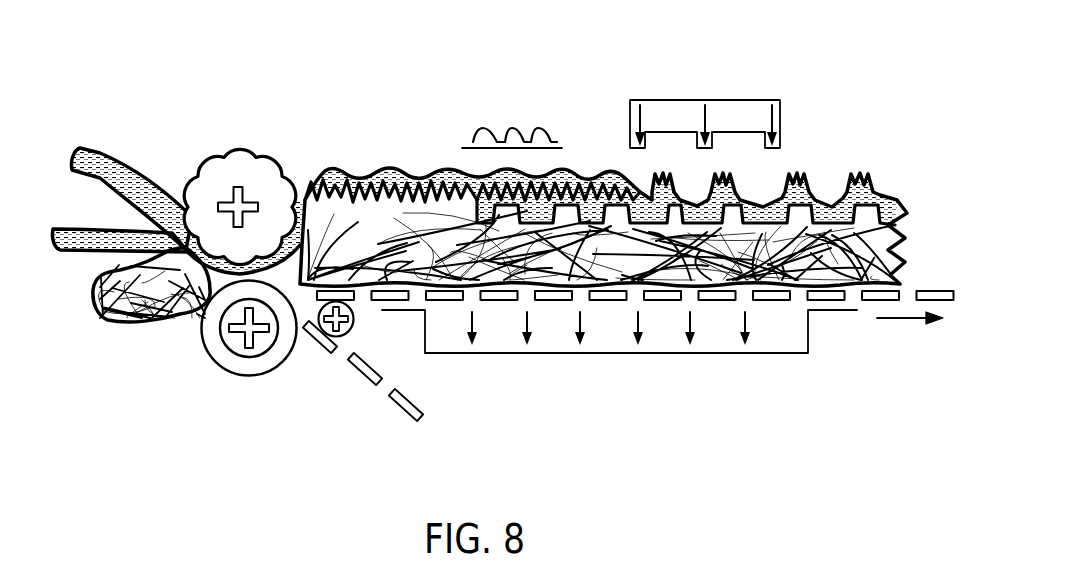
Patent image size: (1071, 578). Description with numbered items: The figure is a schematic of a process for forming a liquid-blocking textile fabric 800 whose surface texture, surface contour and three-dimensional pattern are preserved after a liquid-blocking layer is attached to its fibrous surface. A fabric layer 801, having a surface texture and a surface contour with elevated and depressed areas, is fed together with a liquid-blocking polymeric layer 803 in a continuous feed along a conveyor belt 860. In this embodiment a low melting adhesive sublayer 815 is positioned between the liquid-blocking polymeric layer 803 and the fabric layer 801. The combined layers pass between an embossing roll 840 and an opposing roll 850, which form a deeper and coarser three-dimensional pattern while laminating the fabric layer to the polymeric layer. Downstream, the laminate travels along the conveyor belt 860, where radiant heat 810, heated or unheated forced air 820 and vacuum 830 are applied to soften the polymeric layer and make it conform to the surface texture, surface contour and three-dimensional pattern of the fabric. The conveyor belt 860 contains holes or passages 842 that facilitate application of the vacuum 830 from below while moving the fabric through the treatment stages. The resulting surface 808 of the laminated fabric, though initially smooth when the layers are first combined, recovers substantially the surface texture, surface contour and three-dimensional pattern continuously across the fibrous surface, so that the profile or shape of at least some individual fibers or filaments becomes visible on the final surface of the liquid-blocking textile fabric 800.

The liquid-blocking textile fabric 800 is at (629, 179).
The fabric layer 801 is at (110, 326).
The liquid-blocking polymeric layer 803 is at (117, 170).
The resulting surface 808 is at (870, 148).
The radiant heat 810 is at (510, 125).
The low melting adhesive sublayer 815 is at (63, 250).
The forced air 820 is at (707, 100).
The vacuum 830 is at (630, 344).
The embossing roll 840 is at (253, 148).
The holes or passages 842 is at (473, 294).
The opposing roll 850 is at (250, 377).
The conveyor belt 860 is at (940, 290).